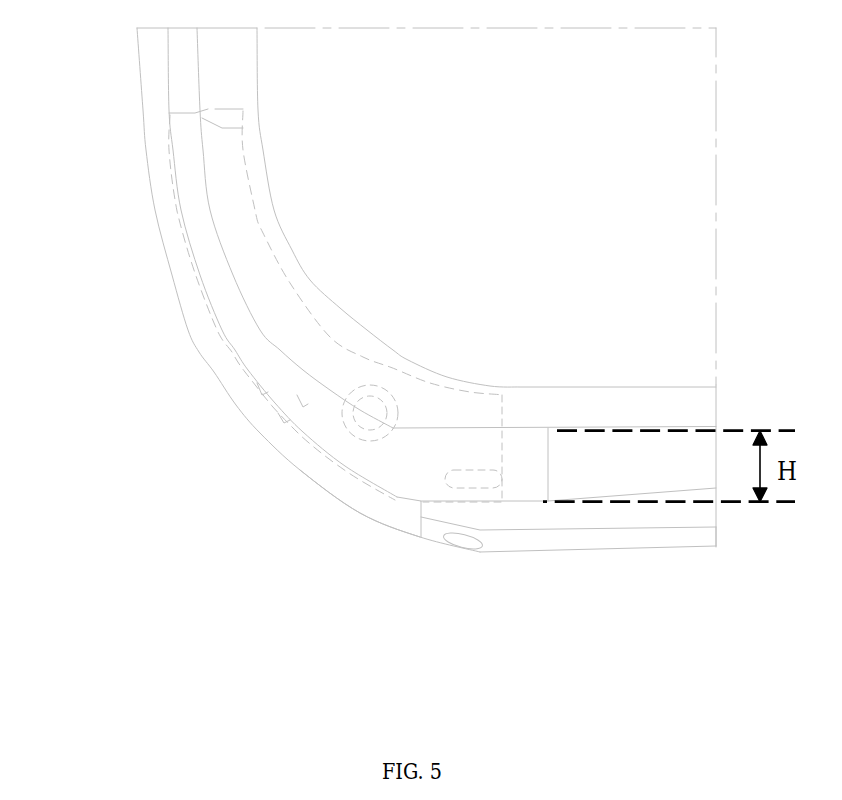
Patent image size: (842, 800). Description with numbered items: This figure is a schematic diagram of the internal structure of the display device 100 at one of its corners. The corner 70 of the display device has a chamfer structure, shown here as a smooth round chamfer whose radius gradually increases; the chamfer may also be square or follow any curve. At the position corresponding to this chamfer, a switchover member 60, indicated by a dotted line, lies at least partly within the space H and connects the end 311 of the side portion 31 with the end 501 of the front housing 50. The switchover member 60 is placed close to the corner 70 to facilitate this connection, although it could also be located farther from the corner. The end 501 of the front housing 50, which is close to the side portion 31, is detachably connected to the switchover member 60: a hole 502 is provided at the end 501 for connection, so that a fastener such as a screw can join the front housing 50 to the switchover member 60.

The side portion 31 is at (153, 136).
The end of the side portion 311 is at (378, 508).
The switchover member 60 is at (197, 277).
The corner 70 is at (213, 432).
The front housing 50 is at (682, 533).
The end of the front housing 501 is at (482, 527).
The hole 502 is at (467, 543).
The display device 100 is at (486, 719).